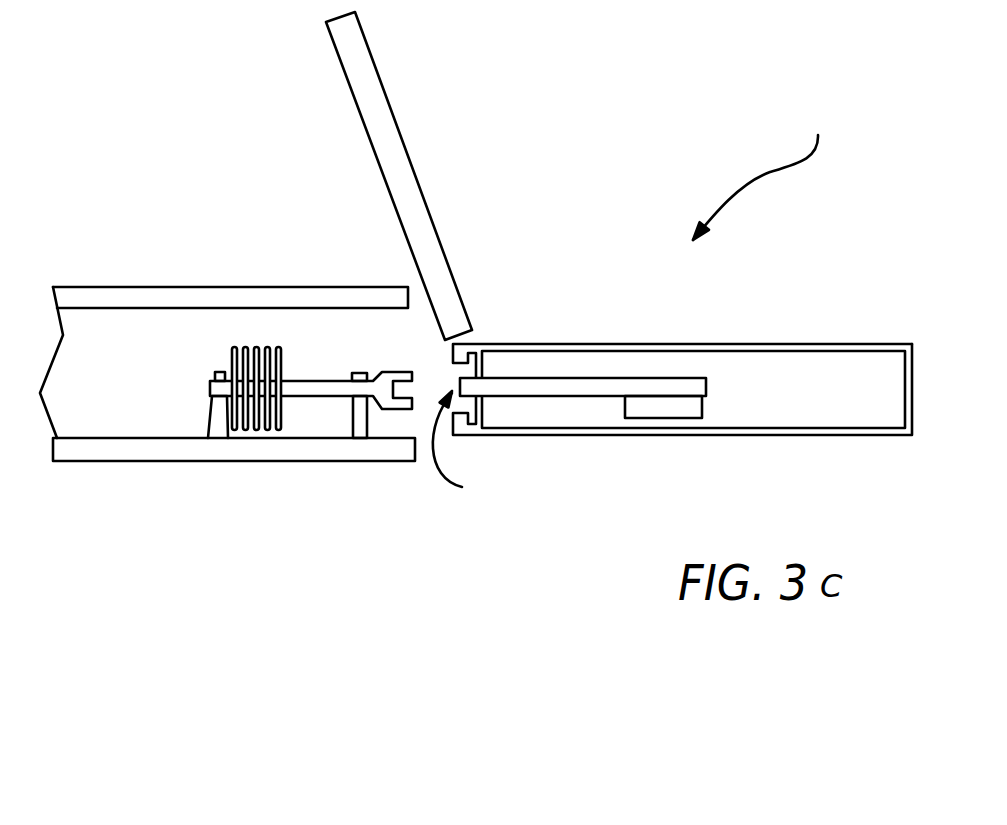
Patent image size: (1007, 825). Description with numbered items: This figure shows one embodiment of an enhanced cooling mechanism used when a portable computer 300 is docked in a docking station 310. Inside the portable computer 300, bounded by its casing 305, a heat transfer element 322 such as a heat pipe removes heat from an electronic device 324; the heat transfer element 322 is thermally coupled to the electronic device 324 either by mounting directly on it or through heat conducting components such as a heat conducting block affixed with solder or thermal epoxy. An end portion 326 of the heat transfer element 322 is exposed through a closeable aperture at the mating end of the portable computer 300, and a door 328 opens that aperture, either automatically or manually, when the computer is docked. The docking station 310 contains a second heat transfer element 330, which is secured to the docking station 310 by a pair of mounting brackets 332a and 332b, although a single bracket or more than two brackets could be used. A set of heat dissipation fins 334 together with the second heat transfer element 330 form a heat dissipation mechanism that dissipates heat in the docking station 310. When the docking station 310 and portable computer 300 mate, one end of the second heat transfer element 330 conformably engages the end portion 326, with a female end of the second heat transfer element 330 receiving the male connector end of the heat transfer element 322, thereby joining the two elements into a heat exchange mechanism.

The portable computer 300 is at (767, 172).
The casing 305 is at (767, 431).
The docking station 310 is at (138, 462).
The heat transfer element 322 is at (680, 387).
The electronic device 324 is at (688, 408).
The end portion 326 is at (471, 444).
The door 328 is at (451, 361).
The second heat transfer element 330 is at (290, 381).
The mounting bracket 332a is at (207, 417).
The mounting bracket 332b is at (351, 413).
The heat dissipation fins 334 is at (228, 357).